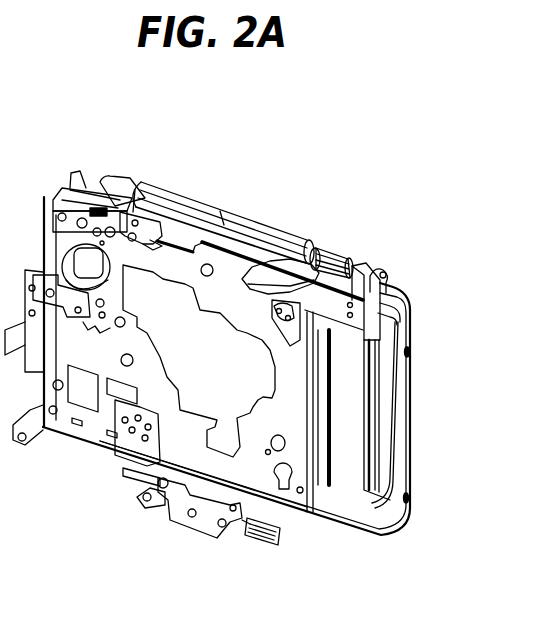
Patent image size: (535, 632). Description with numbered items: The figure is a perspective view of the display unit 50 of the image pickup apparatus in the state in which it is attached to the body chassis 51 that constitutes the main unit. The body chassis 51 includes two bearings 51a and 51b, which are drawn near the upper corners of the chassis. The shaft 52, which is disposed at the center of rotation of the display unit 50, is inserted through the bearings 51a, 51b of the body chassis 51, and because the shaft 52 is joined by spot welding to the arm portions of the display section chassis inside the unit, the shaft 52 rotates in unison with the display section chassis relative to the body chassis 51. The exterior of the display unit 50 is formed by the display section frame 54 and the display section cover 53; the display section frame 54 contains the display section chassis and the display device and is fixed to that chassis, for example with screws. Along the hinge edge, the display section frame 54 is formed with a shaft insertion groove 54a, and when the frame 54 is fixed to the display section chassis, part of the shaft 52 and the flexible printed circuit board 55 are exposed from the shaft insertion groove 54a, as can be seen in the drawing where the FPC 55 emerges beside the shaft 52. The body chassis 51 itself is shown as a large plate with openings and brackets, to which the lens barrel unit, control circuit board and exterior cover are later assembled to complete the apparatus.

The display unit 50 is at (124, 122).
The body chassis 51 is at (167, 447).
The bearing 51a is at (388, 272).
The bearing 51b is at (82, 173).
The shaft 52 is at (363, 267).
The display section cover 53 is at (346, 510).
The display section frame 54 is at (198, 206).
The shaft insertion groove 54a is at (322, 248).
The flexible printed circuit board 55 is at (287, 264).